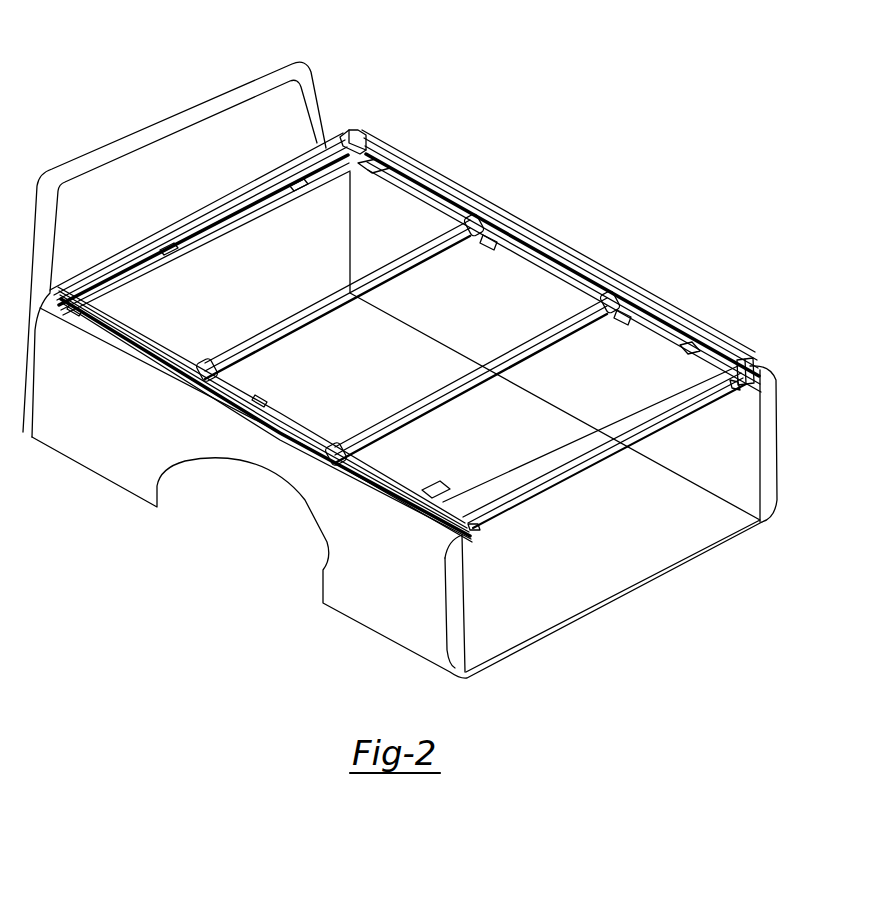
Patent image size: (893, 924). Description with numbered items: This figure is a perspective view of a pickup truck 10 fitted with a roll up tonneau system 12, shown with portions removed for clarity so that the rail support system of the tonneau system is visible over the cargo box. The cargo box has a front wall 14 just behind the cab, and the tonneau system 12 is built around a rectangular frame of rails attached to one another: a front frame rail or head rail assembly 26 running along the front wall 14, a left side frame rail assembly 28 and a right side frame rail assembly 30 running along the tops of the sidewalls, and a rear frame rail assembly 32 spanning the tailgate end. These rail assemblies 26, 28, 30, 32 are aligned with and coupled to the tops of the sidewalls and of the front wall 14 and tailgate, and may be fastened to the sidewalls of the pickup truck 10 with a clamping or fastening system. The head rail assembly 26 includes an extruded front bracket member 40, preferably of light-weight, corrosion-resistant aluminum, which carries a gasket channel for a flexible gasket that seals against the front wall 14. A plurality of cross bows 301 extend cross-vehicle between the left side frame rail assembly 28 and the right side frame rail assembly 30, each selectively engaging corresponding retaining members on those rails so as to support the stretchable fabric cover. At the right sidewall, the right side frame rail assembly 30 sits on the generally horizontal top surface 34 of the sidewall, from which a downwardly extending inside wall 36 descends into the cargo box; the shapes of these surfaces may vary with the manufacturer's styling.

The pickup truck 10 is at (543, 172).
The roll up tonneau system 12 is at (422, 147).
The front wall 14 is at (233, 316).
The head rail assembly 26 is at (322, 138).
The left side frame rail assembly 28 is at (138, 350).
The right side frame rail assembly 30 is at (559, 242).
The rear frame rail assembly 32 is at (563, 502).
The generally horizontal top surface 34 is at (740, 354).
The downwardly extending inside wall 36 is at (736, 462).
The extruded front bracket member 40 is at (353, 157).
The cross bows 301 is at (313, 303).